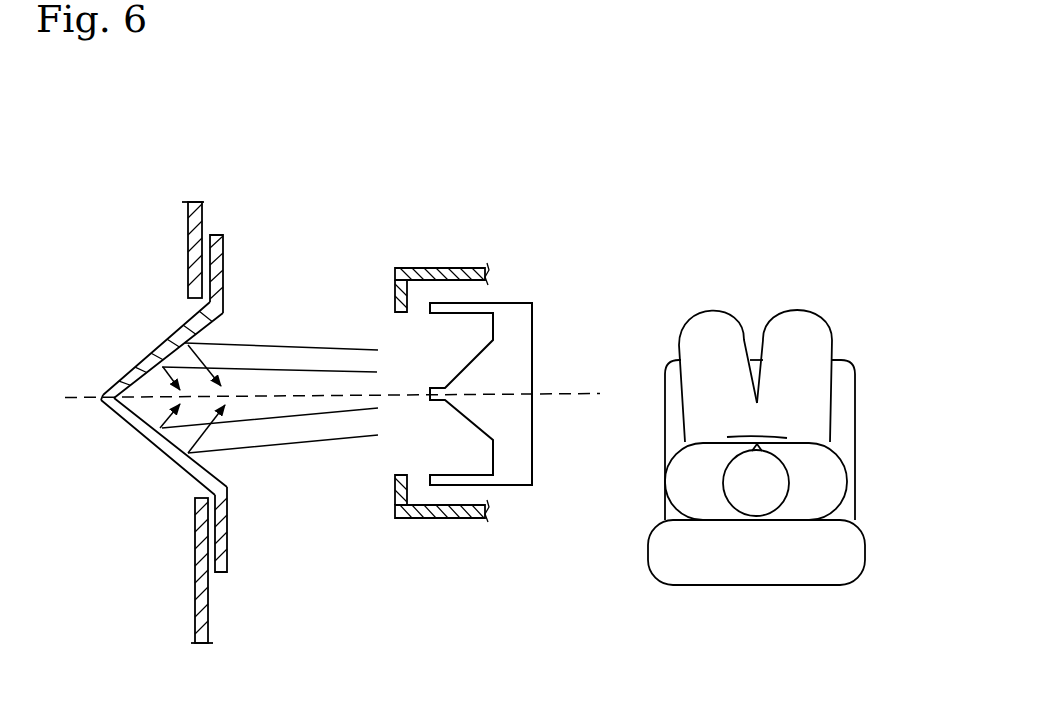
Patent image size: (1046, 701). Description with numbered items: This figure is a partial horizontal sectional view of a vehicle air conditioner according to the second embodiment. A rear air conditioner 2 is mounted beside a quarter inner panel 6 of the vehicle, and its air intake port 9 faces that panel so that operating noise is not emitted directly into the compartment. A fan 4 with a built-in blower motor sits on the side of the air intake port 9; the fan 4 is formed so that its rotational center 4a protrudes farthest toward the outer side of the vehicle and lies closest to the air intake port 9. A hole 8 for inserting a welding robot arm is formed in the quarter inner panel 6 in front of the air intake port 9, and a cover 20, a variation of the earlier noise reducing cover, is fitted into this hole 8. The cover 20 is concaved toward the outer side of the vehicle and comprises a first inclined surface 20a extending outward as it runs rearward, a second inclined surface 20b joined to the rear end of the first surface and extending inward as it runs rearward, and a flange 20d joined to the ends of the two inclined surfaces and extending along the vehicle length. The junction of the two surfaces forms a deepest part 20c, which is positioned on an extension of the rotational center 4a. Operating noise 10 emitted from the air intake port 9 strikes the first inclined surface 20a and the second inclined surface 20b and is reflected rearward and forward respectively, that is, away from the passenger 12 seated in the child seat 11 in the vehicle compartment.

The rear air conditioner 2 is at (421, 354).
The fan 4 is at (508, 393).
The rotational center of the fan 4a is at (578, 397).
The quarter inner panel 6 is at (200, 211).
The hole 8 is at (188, 302).
The air intake port 9 is at (396, 321).
The operating noise 10 is at (316, 347).
The child seat 11 is at (789, 447).
The passenger 12 is at (812, 400).
The cover 20 is at (169, 399).
The first inclined surface 20a is at (167, 348).
The second inclined surface 20b is at (140, 431).
The deepest part 20c is at (137, 394).
The flange 20d is at (224, 257).